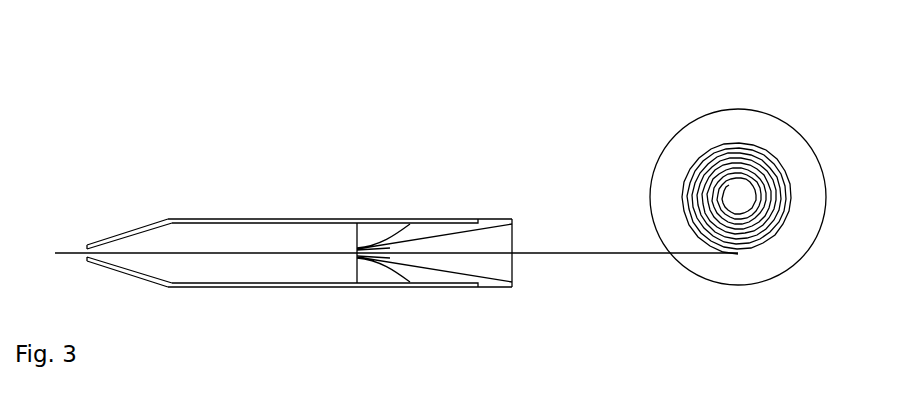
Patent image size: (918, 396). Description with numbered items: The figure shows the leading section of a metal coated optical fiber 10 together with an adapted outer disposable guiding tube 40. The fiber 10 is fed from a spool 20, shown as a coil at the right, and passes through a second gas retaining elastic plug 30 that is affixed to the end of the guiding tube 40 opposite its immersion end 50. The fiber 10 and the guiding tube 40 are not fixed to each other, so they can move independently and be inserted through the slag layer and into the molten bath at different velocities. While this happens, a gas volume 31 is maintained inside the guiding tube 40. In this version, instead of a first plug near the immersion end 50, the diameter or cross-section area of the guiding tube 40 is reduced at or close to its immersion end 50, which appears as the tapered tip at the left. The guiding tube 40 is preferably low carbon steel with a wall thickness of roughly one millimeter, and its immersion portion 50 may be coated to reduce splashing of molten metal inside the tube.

The metal coated optical fiber 10 is at (549, 244).
The spool 20 is at (712, 137).
The second gas retaining elastic plug 30 is at (491, 282).
The gas volume 31 is at (319, 246).
The outer disposable guiding tube 40 is at (250, 220).
The immersion end 50 is at (125, 232).